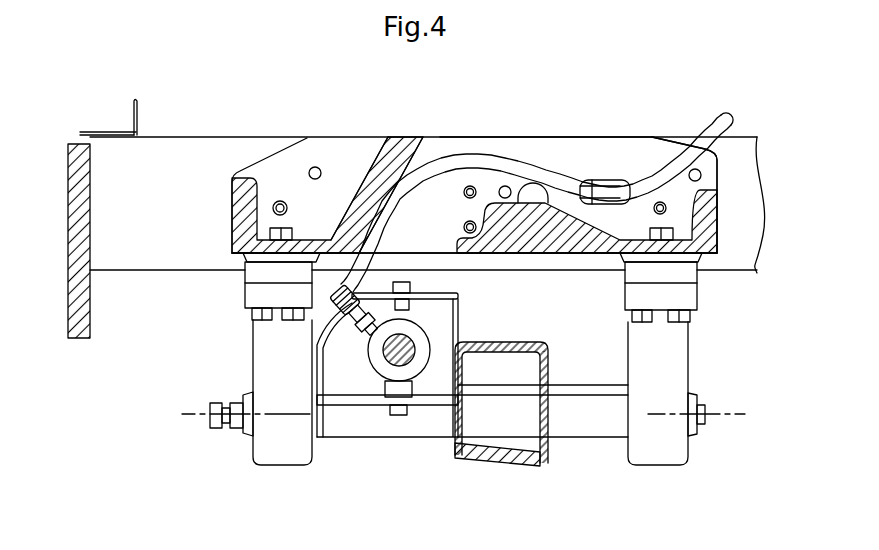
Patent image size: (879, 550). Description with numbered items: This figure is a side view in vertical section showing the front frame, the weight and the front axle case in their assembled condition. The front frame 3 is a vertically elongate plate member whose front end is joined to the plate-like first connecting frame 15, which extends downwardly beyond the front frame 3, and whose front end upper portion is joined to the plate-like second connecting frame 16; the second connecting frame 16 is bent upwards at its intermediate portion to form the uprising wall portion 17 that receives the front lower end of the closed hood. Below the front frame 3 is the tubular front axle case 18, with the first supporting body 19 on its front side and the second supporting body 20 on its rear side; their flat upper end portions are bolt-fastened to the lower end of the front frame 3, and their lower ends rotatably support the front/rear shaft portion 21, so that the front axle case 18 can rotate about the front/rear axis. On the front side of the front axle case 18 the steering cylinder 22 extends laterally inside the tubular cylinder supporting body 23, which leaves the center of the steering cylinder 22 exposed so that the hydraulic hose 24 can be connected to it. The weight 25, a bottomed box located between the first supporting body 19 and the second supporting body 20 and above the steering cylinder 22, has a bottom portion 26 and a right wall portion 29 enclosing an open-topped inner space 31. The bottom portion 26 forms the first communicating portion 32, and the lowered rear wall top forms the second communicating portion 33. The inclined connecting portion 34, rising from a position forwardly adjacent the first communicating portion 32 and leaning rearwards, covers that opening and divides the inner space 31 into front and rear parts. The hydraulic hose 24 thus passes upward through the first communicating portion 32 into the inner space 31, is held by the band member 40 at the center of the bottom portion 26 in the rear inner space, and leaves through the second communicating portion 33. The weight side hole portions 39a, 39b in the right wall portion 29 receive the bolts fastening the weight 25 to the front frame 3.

The front frame 3 is at (194, 257).
The first connecting frame 15 is at (87, 307).
The second connecting frame 16 is at (112, 128).
The uprising wall portion 17 is at (138, 108).
The front axle case 18 is at (546, 455).
The first supporting body 19 is at (278, 450).
The second supporting body 20 is at (655, 448).
The front/rear shaft portion 21 is at (590, 417).
The steering cylinder 22 is at (372, 358).
The cylinder supporting body 23 is at (450, 378).
The hydraulic hose 24 is at (718, 108).
The weight 25 is at (642, 120).
The bottom portion 26 is at (538, 256).
The right wall portion 29 is at (556, 140).
The inner space 31 is at (577, 148).
The first communicating portion 32 is at (438, 262).
The second communicating portion 33 is at (720, 175).
The connecting portion 34 is at (381, 140).
The bolt hole 39a is at (470, 185).
The bolt hole 39b is at (506, 185).
The band member 40 is at (620, 178).